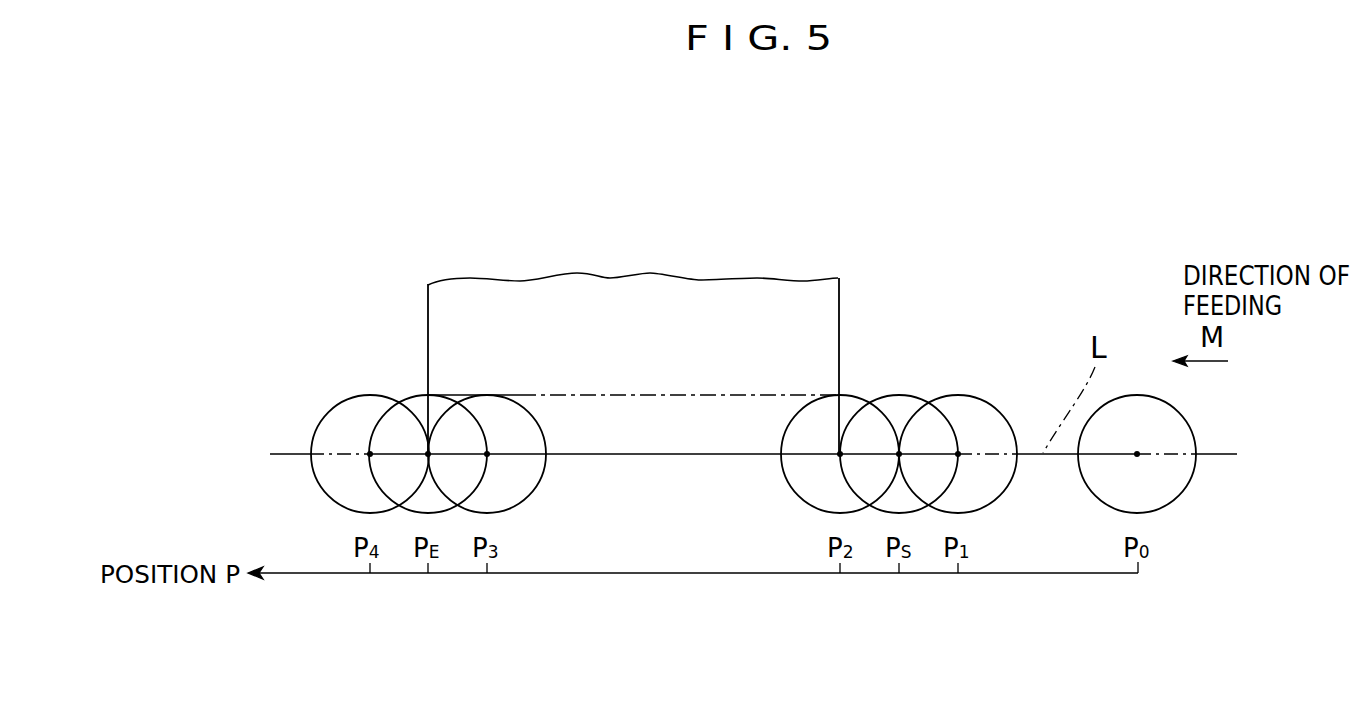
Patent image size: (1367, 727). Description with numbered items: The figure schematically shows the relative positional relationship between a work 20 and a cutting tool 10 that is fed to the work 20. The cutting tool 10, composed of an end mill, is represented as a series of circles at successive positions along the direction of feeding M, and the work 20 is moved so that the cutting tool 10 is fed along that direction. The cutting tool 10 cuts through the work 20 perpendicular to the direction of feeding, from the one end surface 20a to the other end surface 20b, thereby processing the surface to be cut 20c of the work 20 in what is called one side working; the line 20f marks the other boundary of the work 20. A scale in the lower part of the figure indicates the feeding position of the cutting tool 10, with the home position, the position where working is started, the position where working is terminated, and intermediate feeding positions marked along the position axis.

The cutting tool 10 is at (417, 398).
The work 20 is at (637, 319).
The one end surface 20a is at (840, 322).
The other end surface 20b is at (427, 315).
The surface to be cut 20c is at (628, 456).
The upper boundary line of region 20 20f is at (675, 396).